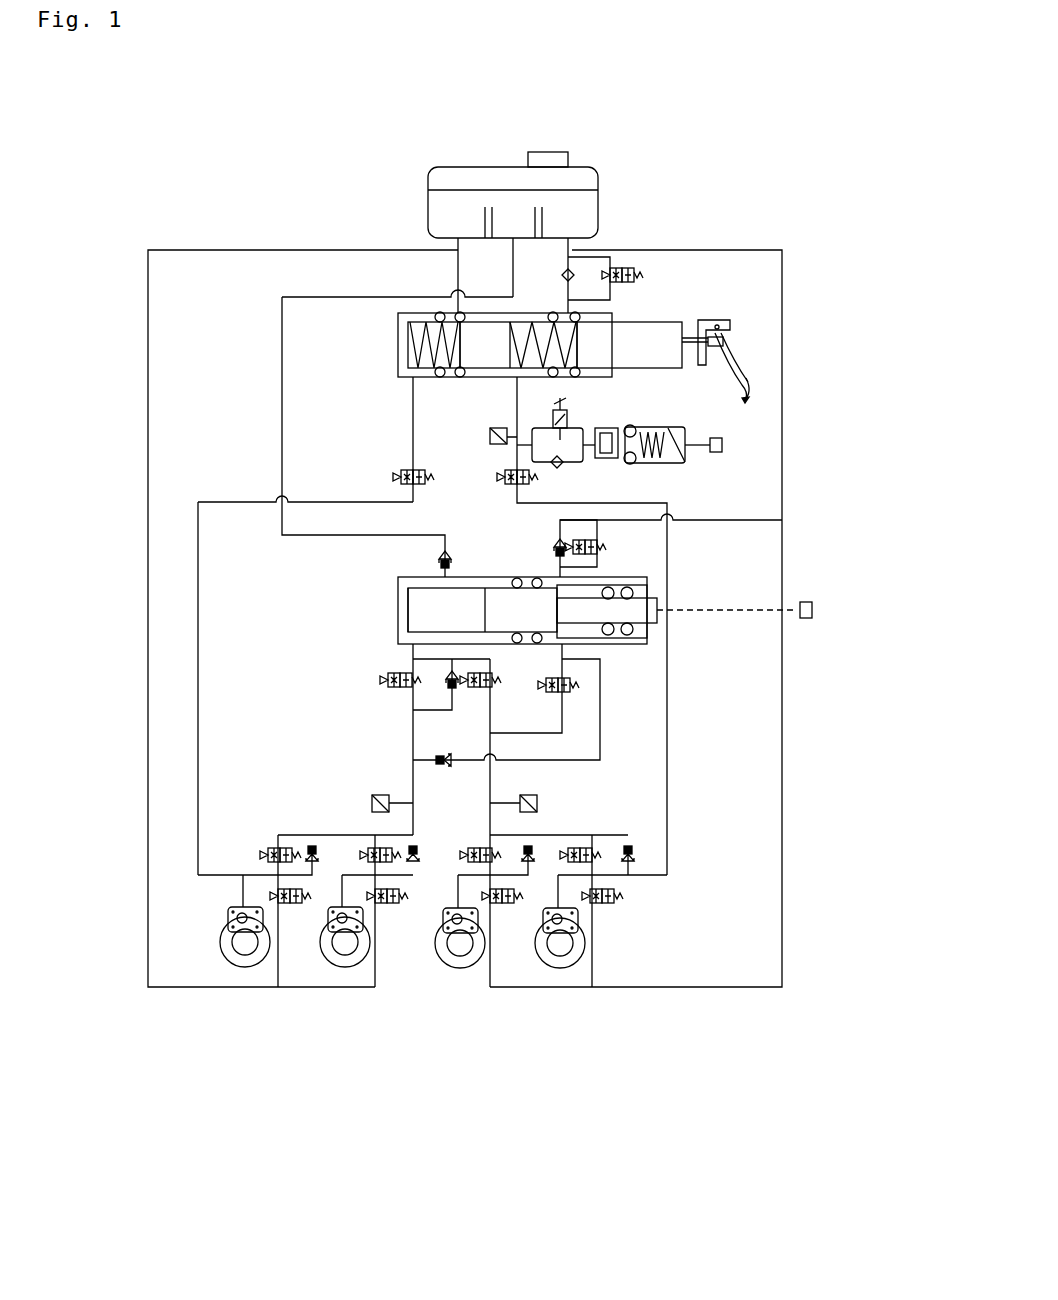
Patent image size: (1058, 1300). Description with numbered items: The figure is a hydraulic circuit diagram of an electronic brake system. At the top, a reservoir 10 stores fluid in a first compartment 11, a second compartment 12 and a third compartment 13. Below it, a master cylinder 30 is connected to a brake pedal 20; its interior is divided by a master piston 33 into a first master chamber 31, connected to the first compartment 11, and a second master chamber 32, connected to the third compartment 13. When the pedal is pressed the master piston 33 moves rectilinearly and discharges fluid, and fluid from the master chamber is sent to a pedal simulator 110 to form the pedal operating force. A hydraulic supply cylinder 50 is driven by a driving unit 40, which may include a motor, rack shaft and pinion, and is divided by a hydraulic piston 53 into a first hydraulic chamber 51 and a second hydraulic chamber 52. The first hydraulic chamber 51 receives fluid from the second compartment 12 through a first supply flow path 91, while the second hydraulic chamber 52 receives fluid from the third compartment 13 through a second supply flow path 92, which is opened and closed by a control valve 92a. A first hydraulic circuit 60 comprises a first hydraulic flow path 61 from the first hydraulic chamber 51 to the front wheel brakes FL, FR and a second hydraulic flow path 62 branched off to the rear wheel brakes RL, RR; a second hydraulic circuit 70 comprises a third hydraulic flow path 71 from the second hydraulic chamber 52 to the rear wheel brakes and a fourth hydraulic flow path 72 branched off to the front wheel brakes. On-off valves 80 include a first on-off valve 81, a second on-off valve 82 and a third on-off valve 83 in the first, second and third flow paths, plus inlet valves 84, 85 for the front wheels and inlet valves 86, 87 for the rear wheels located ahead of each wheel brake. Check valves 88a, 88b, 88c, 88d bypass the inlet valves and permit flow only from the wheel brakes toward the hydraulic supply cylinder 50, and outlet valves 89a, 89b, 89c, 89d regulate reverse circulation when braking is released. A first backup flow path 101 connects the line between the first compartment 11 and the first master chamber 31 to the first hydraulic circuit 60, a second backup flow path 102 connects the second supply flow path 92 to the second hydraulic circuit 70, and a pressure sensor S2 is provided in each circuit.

The reservoir 10 is at (492, 148).
The first compartment 11 is at (442, 167).
The second compartment 12 is at (530, 167).
The third compartment 13 is at (578, 167).
The brake pedal 20 is at (718, 345).
The master cylinder 30 is at (388, 306).
The first master chamber 31 is at (450, 354).
The second master chamber 32 is at (558, 328).
The master piston 33 is at (478, 337).
The driving unit 40 is at (815, 610).
The hydraulic supply cylinder 50 is at (390, 620).
The first hydraulic chamber 51 is at (430, 609).
The second hydraulic chamber 52 is at (578, 595).
The hydraulic piston 53 is at (527, 620).
The first hydraulic circuit 60 is at (656, 1111).
The first hydraulic flow path 61 is at (413, 733).
The second hydraulic flow path 62 is at (607, 753).
The second hydraulic circuit 70 is at (656, 1143).
The third hydraulic flow path 71 is at (548, 700).
The fourth hydraulic flow path 72 is at (493, 722).
The on-off valves 80 is at (748, 1173).
The first on-off valve 81 is at (378, 690).
The second on-off valve 82 is at (475, 670).
The third on-off valve 83 is at (580, 684).
The inlet valve for the front wheels 84 is at (258, 850).
The inlet valve for the front wheels 85 is at (365, 848).
The inlet valve for the rear wheels 86 is at (478, 848).
The inlet valve for the rear wheels 87 is at (605, 853).
The check valve 88a is at (312, 866).
The check valve 88b is at (413, 866).
The check valve 88c is at (528, 868).
The check valve 88d is at (632, 858).
The outlet valve 89a is at (290, 905).
The outlet valve 89b is at (390, 905).
The outlet valve 89c is at (503, 905).
The outlet valve 89d is at (605, 905).
The first supply flow path 91 is at (282, 348).
The second supply flow path 92 is at (783, 456).
The control valve 92a is at (610, 548).
The first backup flow path 101 is at (148, 323).
The second backup flow path 102 is at (783, 646).
The pedal simulator 110 is at (672, 420).
The pressure sensor S2 is at (372, 803).
The wheel brake of the front left wheel FL is at (245, 945).
The wheel brake of the front right wheel FR is at (345, 945).
The wheel brake of the rear left wheel RL is at (462, 945).
The wheel brake of the rear right wheel RR is at (562, 945).